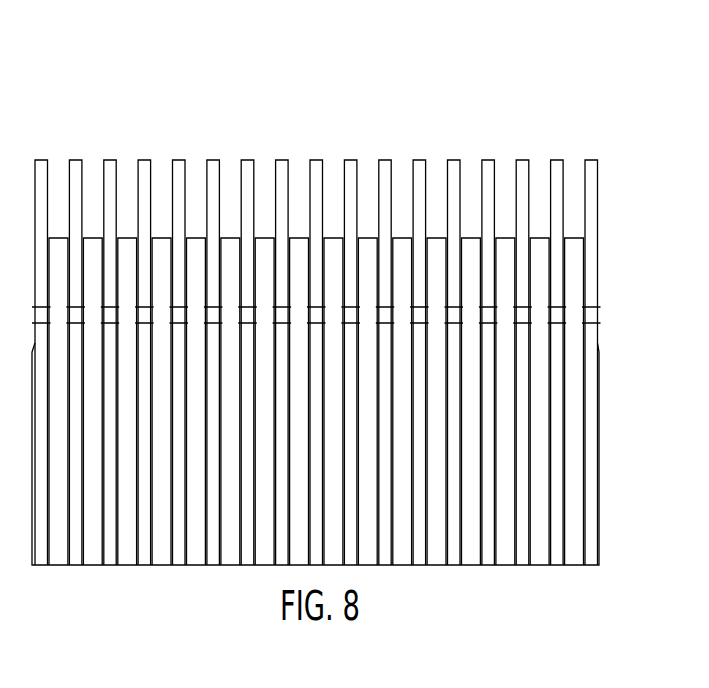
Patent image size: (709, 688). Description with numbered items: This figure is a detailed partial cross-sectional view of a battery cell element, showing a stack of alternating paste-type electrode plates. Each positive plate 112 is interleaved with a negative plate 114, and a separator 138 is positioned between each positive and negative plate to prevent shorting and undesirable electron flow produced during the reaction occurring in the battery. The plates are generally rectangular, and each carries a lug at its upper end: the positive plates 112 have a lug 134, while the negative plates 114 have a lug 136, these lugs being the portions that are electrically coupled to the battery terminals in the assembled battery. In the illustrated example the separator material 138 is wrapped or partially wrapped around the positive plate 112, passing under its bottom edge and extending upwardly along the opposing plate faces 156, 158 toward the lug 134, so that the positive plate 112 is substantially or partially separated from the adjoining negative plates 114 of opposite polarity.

The positive plate 112 is at (555, 432).
The negative plate 114 is at (590, 366).
The lug 134 is at (552, 160).
The lug 136 is at (591, 160).
The separator 138 is at (587, 306).
The plate face 156 is at (567, 498).
The plate face 158 is at (550, 498).